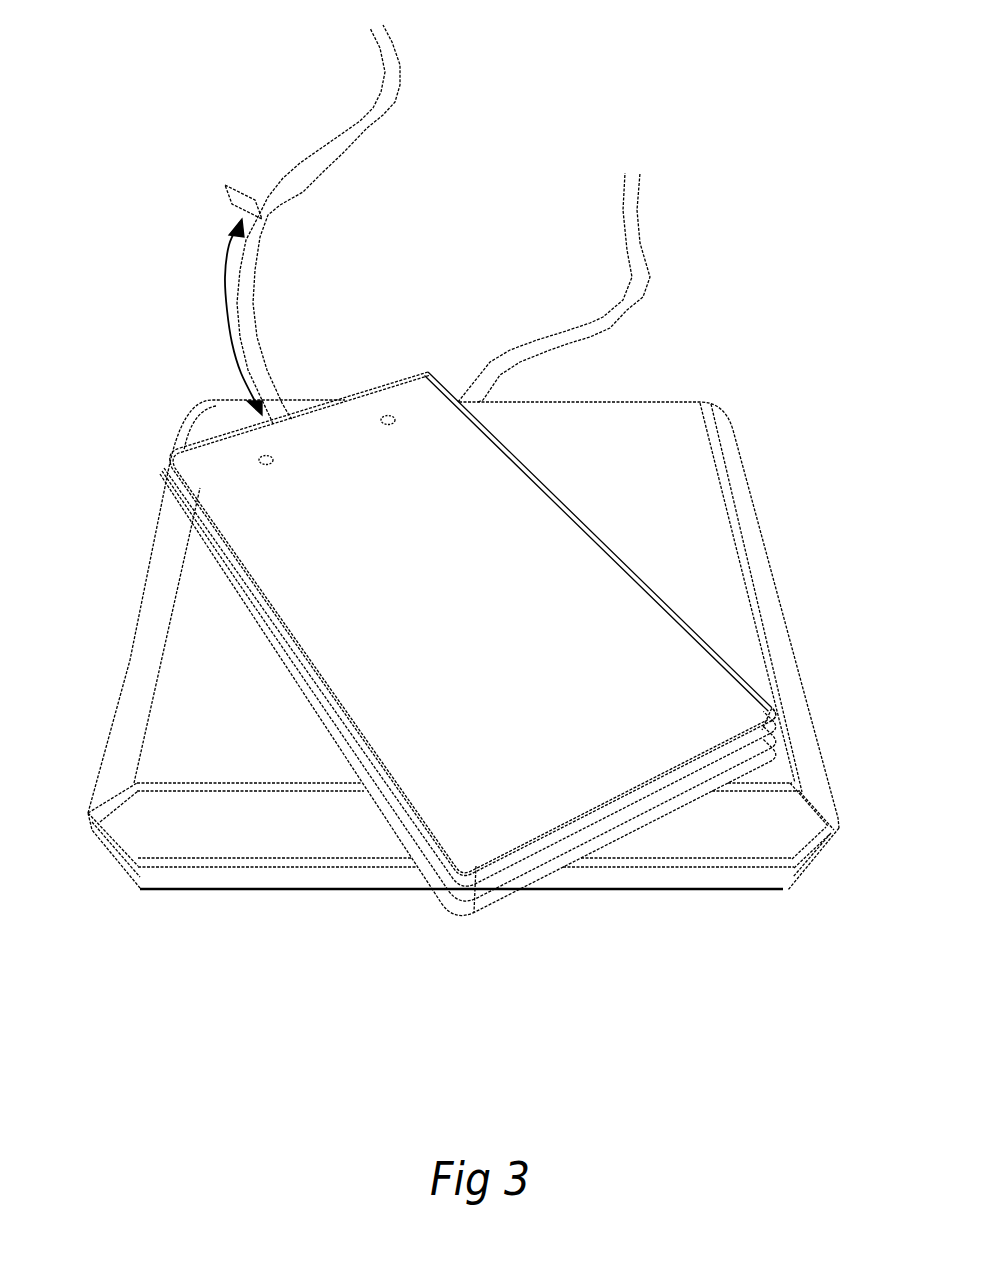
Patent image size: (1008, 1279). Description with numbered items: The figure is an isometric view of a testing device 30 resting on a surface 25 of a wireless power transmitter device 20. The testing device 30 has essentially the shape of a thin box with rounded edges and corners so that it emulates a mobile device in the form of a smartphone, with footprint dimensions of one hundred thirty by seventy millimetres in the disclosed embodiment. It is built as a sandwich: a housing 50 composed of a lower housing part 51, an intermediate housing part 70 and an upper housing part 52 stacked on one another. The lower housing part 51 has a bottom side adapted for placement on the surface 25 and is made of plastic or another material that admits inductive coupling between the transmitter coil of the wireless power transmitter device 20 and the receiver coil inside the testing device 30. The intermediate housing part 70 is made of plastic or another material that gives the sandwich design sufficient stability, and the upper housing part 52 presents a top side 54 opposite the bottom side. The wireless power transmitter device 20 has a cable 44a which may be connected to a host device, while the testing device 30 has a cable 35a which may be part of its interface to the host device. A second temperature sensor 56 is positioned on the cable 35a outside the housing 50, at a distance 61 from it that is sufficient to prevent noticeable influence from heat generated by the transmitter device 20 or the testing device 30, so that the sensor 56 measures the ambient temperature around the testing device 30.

The wireless power transmitter device 20 is at (238, 717).
The surface 25 is at (705, 522).
The testing device 30 is at (462, 590).
The cable 35a is at (340, 136).
The cable 44a is at (634, 240).
The housing 50 is at (745, 701).
The lower housing part 51 is at (441, 902).
The upper housing part 52 is at (484, 870).
The top side 54 is at (531, 497).
The second temperature sensor 56 is at (238, 205).
The distance 61 is at (228, 319).
The intermediate housing part 70 is at (464, 892).